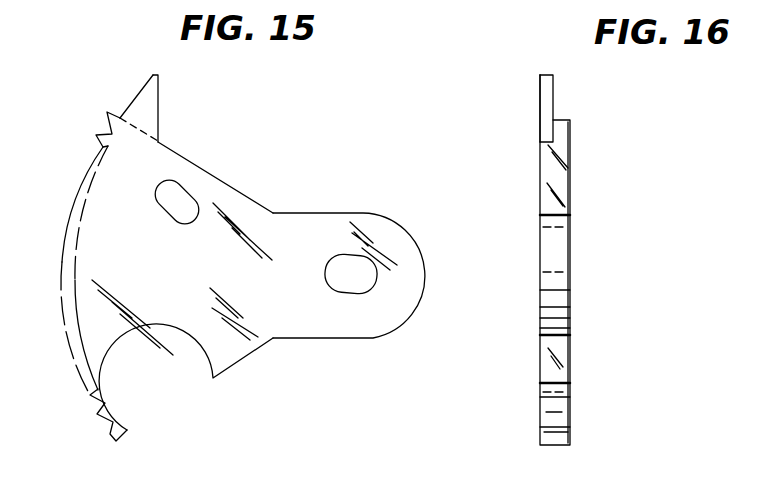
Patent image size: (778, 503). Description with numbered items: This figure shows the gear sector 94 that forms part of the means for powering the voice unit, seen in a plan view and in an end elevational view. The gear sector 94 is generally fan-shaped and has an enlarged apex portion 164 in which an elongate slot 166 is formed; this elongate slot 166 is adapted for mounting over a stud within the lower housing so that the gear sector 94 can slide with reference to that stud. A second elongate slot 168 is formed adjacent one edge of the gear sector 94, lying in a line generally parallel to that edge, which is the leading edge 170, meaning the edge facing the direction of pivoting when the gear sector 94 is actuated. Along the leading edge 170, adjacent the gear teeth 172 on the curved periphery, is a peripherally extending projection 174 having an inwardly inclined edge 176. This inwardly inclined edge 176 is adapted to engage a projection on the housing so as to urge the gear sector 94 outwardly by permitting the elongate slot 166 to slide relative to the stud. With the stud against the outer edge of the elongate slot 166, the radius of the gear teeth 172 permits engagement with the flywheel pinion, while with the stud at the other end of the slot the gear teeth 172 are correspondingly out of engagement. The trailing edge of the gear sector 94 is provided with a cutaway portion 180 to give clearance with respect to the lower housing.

In FIG. 15, the gear sector 94 is at (266, 177).
In FIG. 16, the gear sector 94 is at (592, 185).
In FIG. 15, the enlarged apex portion 164 is at (365, 212).
In FIG. 16, the enlarged apex portion 164 is at (560, 204).
In FIG. 15, the elongate slot 166 is at (365, 272).
In FIG. 15, the second elongate slot 168 is at (177, 191).
In FIG. 15, the leading edge 170 is at (253, 202).
In FIG. 16, the leading edge 170 is at (550, 178).
In FIG. 15, the gear teeth 172 is at (96, 135).
In FIG. 15, the peripherally extending projection 174 is at (137, 97).
In FIG. 16, the peripherally extending projection 174 is at (538, 100).
In FIG. 15, the inwardly inclined edge 176 is at (160, 107).
In FIG. 16, the inwardly inclined edge 176 is at (553, 108).
In FIG. 15, the cutaway portion 180 is at (188, 372).
In FIG. 16, the cutaway portion 180 is at (563, 393).